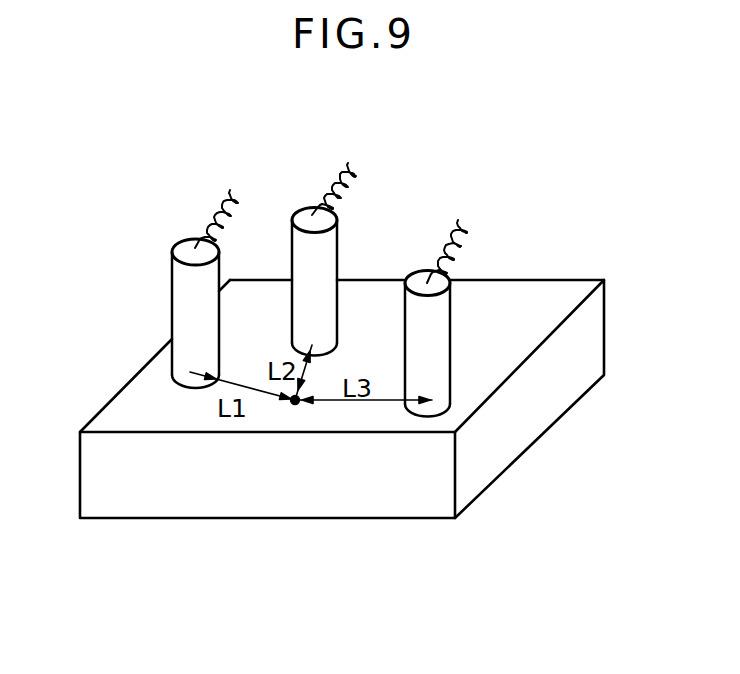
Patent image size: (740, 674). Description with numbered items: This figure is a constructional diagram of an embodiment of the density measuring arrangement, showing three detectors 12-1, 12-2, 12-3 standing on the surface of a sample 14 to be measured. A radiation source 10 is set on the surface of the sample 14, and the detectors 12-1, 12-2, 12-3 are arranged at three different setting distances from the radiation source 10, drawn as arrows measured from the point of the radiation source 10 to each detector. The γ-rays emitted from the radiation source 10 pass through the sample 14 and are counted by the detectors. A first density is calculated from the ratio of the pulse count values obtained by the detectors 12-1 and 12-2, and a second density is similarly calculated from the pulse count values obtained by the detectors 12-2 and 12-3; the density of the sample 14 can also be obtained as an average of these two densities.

The detector 12-1 is at (172, 277).
The detector 12-2 is at (298, 212).
The detector 12-3 is at (417, 268).
The sample 14 is at (580, 274).
The radiation source 10 is at (292, 410).